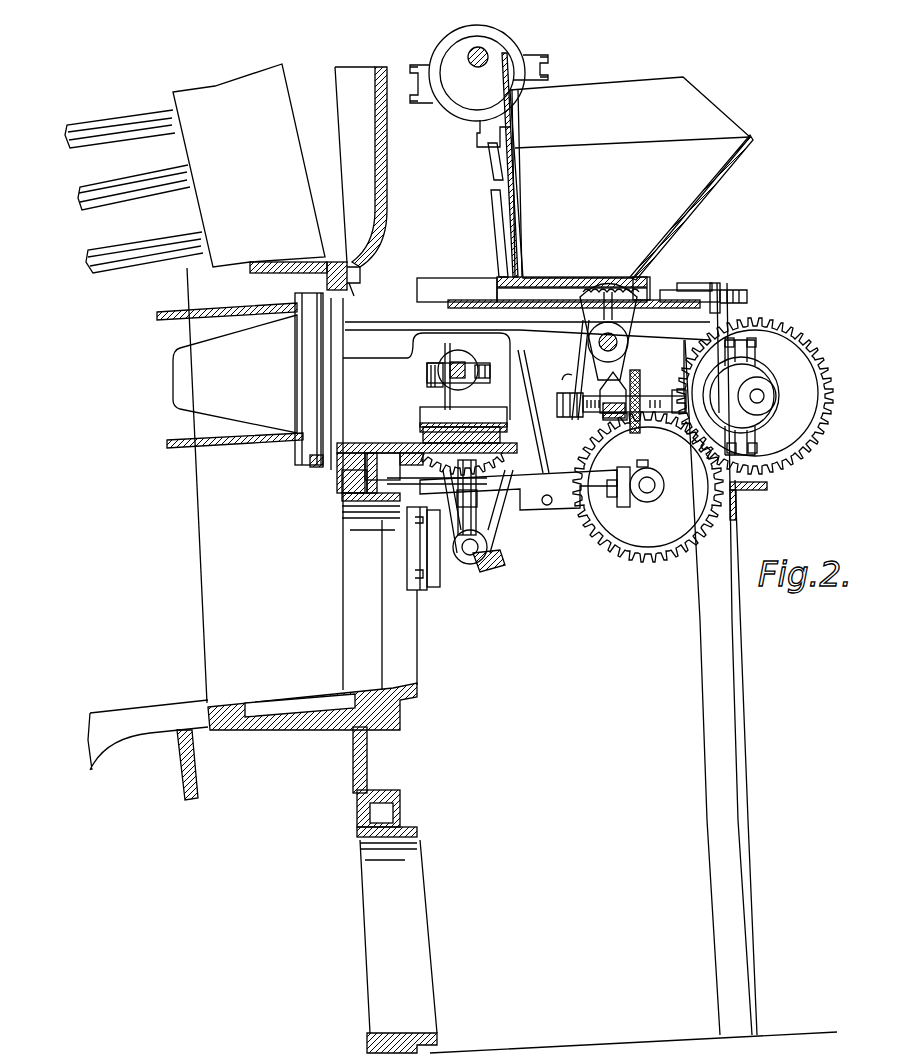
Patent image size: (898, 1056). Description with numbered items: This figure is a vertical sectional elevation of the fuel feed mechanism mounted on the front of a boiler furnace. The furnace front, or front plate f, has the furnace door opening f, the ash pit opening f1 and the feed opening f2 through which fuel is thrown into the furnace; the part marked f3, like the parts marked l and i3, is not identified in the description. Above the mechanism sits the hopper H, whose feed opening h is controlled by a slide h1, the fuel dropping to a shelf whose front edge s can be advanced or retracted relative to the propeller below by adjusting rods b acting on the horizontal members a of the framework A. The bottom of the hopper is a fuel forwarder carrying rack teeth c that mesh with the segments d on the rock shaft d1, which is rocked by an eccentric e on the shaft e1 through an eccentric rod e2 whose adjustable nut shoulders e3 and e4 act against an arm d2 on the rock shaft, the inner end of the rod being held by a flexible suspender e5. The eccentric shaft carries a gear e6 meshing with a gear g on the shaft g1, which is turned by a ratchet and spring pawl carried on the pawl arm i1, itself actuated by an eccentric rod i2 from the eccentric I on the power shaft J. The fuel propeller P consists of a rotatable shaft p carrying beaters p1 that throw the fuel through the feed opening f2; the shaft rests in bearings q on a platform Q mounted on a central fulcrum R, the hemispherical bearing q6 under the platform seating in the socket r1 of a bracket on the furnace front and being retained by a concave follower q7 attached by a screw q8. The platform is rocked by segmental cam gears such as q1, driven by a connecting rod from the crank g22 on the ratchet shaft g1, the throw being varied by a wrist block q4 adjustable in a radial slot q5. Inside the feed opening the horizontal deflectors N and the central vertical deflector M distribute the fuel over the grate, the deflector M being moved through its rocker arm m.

The furnace door opening f is at (312, 463).
The ash pit opening f1 is at (398, 946).
The feed opening f2 is at (352, 378).
The frame bracket f3 is at (356, 300).
The vertical deflector M is at (235, 374).
The rocker arm m is at (315, 470).
The horizontal deflectors N is at (192, 432).
The eccentric I is at (479, 86).
The power shaft J is at (483, 45).
The feed opening h is at (522, 250).
The slide h1 is at (508, 58).
The hopper H is at (631, 178).
The base plate l is at (586, 276).
The rack teeth c is at (651, 278).
The front edge of shelf s is at (474, 298).
The adjusting rods b is at (624, 290).
The horizontal members a is at (527, 356).
The pawl arm i1 is at (571, 500).
The eccentric rod i2 is at (539, 411).
The lever arm i3 is at (535, 485).
The platform Q is at (435, 386).
The fuel propeller P is at (458, 362).
The propeller shaft p is at (460, 362).
The beaters p1 is at (472, 388).
The bearings q is at (463, 465).
The segmental cam gear q1 is at (412, 473).
The wrist block q4 is at (460, 490).
The radial slot q5 is at (482, 433).
The hemispherical bearing q6 is at (450, 430).
The concave follower q7 is at (478, 470).
The screw q8 is at (485, 472).
The hemispherical socket r1 is at (410, 446).
The central fulcrum R is at (421, 541).
The segments d is at (609, 332).
The rock shaft d1 is at (618, 337).
The arm d2 is at (613, 393).
The eccentric e is at (741, 396).
The eccentric shaft e1 is at (762, 393).
The eccentric rod e2 is at (621, 396).
The adjustable shoulder e3 is at (638, 372).
The adjustable shoulder e4 is at (601, 423).
The flexible suspender e5 is at (571, 370).
The gear e6 is at (755, 396).
The gear g is at (648, 487).
The shaft g1 is at (660, 485).
The crank g22 is at (644, 460).
The framework A is at (726, 659).